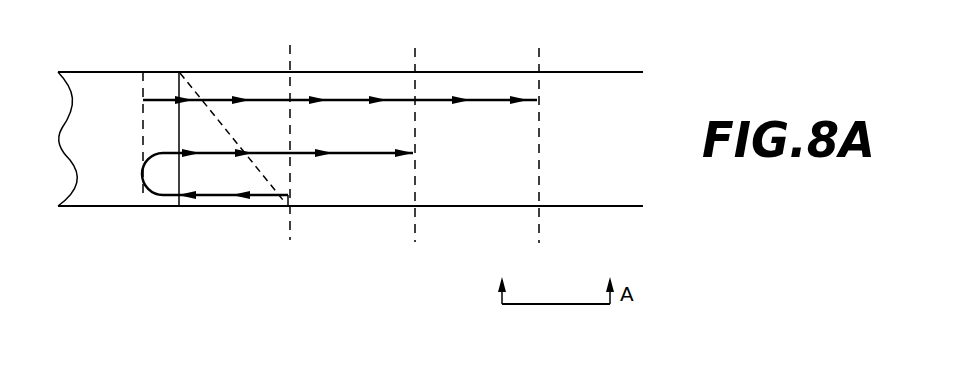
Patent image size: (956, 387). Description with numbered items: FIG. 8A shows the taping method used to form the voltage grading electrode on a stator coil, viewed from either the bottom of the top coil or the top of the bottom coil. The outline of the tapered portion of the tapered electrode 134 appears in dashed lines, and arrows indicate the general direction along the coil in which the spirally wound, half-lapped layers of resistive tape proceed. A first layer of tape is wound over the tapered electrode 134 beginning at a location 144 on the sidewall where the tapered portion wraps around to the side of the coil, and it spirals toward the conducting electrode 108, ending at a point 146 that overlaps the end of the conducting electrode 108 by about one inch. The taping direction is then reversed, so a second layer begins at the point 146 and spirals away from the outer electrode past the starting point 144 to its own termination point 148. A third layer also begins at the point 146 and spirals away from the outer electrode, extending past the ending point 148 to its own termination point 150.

The conducting electrode 108 is at (98, 82).
The tapered electrode 134 is at (208, 127).
The termination point of third layer of tape 150 is at (540, 80).
The end of first layer of taping 146 is at (145, 188).
The termination point of second layer of tape 148 is at (413, 160).
The beginning location of first layer of taping 144 is at (283, 205).